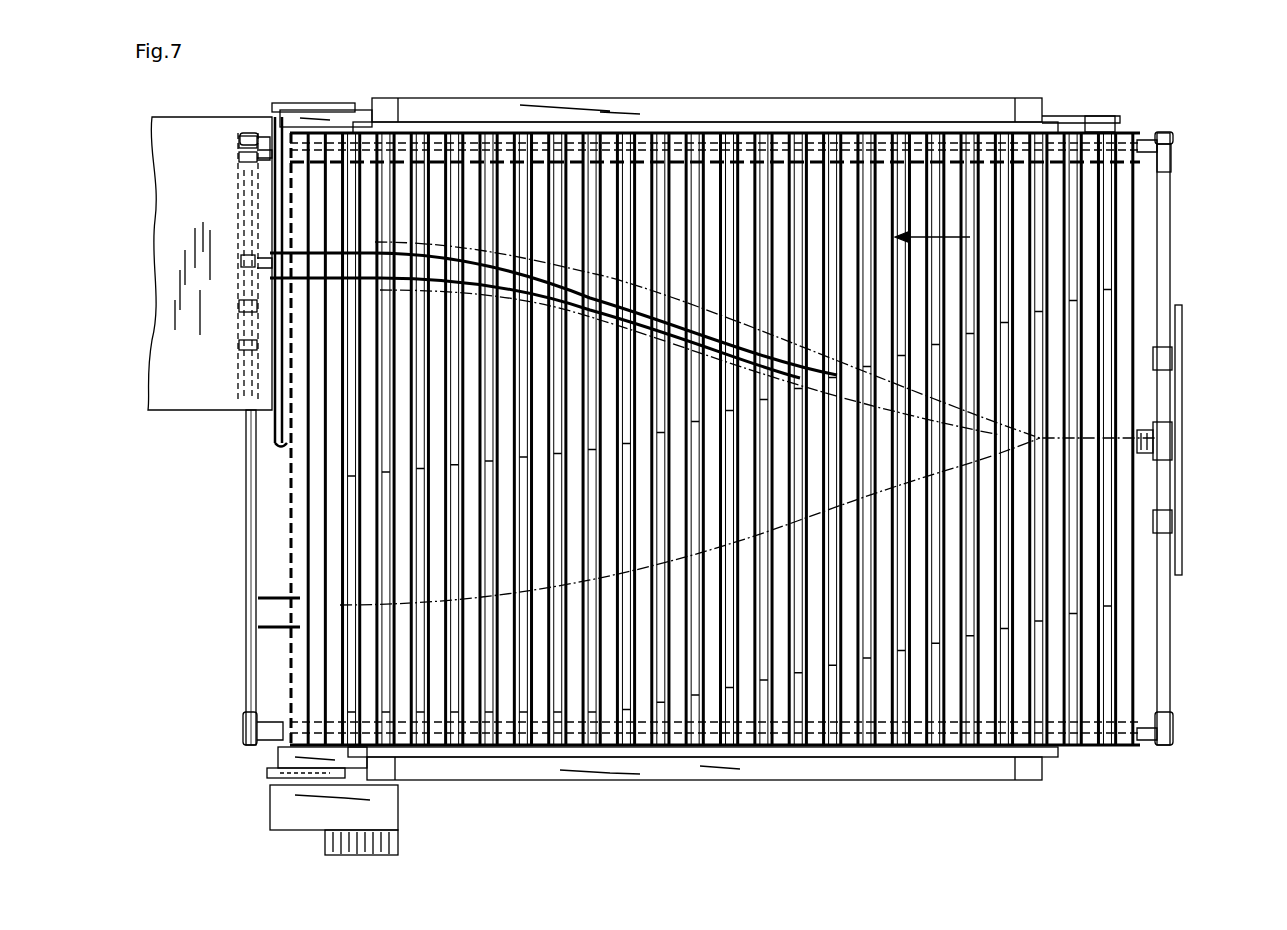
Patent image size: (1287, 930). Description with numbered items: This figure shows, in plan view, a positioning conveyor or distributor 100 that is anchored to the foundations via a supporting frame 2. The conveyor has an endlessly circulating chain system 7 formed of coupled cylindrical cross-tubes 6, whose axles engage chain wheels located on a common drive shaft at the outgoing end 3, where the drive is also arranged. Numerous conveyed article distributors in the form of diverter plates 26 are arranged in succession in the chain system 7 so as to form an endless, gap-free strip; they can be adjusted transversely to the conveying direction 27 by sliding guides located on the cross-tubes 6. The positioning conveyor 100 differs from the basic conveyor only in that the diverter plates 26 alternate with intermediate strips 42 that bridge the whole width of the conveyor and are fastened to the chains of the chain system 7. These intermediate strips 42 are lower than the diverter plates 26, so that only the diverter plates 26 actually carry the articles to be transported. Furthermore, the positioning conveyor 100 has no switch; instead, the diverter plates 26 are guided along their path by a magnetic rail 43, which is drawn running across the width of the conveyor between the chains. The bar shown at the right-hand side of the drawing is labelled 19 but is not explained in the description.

The supporting frame 2 is at (833, 105).
The outgoing end 3 is at (185, 478).
The cylindrical tubes 6 is at (247, 540).
The chain system 7 is at (251, 133).
The guide bar 19 is at (1218, 305).
The diverter plates 26 is at (237, 208).
The conveying direction 27 is at (937, 237).
The intermediate strips 42 is at (1110, 600).
The magnetic rail 43 is at (551, 265).
The positioning conveyor 100 is at (1062, 100).